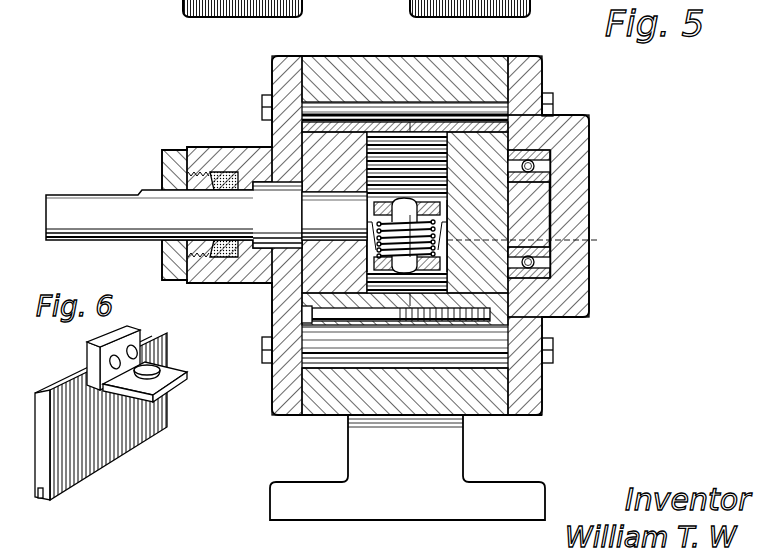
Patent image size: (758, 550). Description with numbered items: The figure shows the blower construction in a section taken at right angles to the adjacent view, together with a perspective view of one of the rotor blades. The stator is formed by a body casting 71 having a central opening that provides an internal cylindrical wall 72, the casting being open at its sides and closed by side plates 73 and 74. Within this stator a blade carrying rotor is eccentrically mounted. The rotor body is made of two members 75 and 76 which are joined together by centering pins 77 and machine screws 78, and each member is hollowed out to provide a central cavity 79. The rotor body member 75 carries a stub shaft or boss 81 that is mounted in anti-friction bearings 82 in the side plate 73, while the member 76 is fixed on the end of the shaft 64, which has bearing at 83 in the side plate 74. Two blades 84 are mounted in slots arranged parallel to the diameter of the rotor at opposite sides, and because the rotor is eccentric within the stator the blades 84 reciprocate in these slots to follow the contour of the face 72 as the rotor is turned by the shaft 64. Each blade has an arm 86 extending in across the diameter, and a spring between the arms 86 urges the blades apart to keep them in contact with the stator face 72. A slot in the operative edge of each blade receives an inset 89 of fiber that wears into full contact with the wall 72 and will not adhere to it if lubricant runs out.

In FIG. 5, the shaft 64 is at (96, 200).
In FIG. 5, the body casting 71 is at (471, 70).
In FIG. 5, the internal cylindrical wall 72 is at (345, 385).
In FIG. 5, the side plate 73 is at (575, 218).
In FIG. 5, the side plate 74 is at (292, 128).
In FIG. 5, the rotor body member 75 is at (485, 146).
In FIG. 5, the rotor body member 76 is at (312, 262).
In FIG. 5, the centering pins 77 is at (350, 117).
In FIG. 5, the machine screws 78 is at (306, 313).
In FIG. 5, the central cavity 79 is at (392, 157).
In FIG. 5, the stub shaft or boss 81 is at (530, 205).
In FIG. 5, the anti-friction bearings 82 is at (541, 258).
In FIG. 5, the bearing 83 is at (238, 197).
In FIG. 5, the blades 84 is at (490, 342).
In FIG. 6, the blades 84 is at (113, 447).
In FIG. 6, the arm 86 is at (175, 381).
In FIG. 5, the inset 89 is at (495, 357).
In FIG. 6, the inset 89 is at (40, 500).